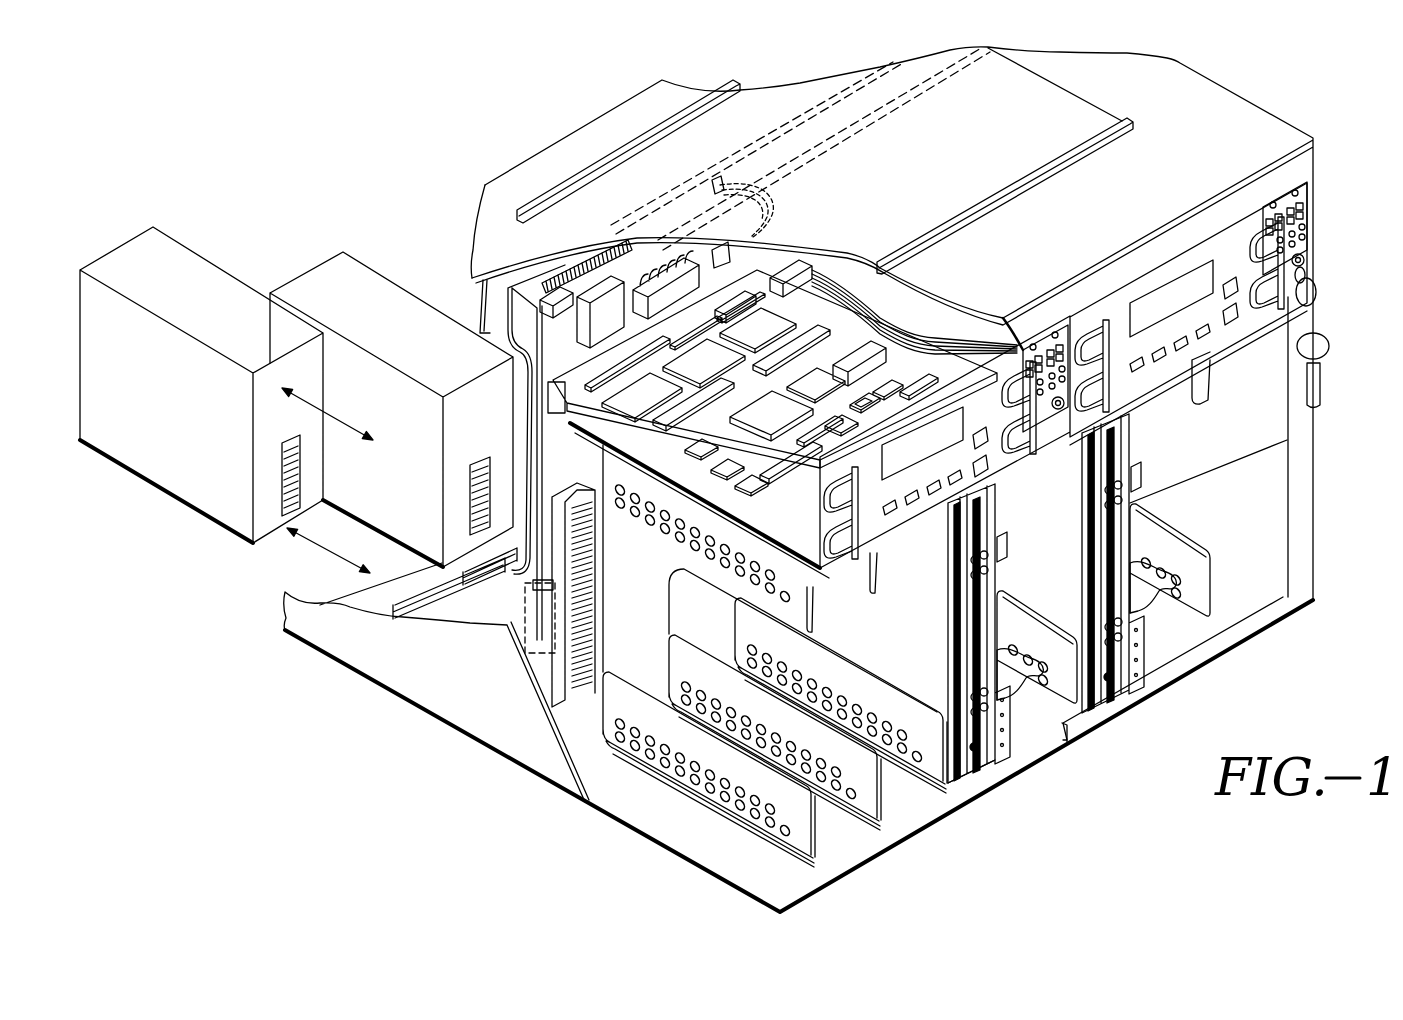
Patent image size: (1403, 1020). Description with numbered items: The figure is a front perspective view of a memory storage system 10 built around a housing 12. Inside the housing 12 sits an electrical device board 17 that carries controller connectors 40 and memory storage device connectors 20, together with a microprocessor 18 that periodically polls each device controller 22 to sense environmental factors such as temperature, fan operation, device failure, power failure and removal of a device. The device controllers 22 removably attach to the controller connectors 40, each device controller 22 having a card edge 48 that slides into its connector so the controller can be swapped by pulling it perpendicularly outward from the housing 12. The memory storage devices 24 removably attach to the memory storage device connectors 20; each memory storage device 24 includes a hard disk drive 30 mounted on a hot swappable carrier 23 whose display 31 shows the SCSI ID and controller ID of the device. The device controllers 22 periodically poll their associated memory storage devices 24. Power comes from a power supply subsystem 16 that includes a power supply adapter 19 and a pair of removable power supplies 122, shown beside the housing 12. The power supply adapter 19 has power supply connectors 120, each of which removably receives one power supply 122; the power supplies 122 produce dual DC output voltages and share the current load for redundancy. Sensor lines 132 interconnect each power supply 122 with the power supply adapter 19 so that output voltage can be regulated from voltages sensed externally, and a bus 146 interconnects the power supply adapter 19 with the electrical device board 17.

The memory storage system 10 is at (1256, 70).
The housing 12 is at (1280, 137).
The power supply subsystem 16 is at (448, 250).
The electrical device board 17 is at (597, 743).
The microprocessor 18 is at (632, 268).
The power supply adapter 19 is at (483, 300).
The memory storage device connector 20 is at (562, 667).
The device controller 22 is at (1233, 263).
The hot swappable carrier 23 is at (1040, 677).
The memory storage device 24 is at (1107, 703).
The hard disk drive 30 is at (1057, 557).
The display 31 is at (960, 780).
The controller connector 40 is at (762, 274).
The card edge 48 is at (567, 405).
The power supply connector 120 is at (527, 567).
The removable power supply 122 is at (183, 260).
The sensor line 132 is at (780, 188).
The bus 146 is at (562, 245).